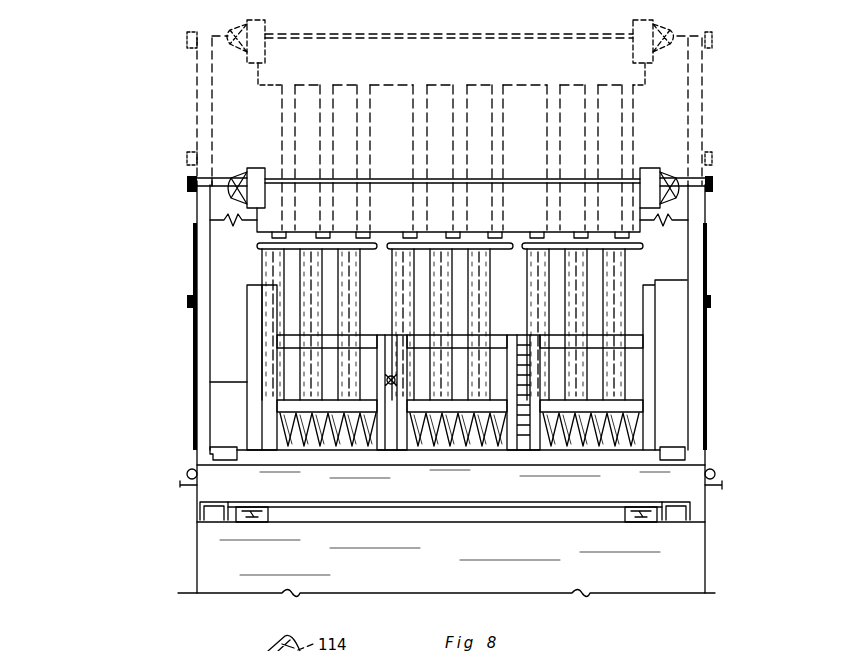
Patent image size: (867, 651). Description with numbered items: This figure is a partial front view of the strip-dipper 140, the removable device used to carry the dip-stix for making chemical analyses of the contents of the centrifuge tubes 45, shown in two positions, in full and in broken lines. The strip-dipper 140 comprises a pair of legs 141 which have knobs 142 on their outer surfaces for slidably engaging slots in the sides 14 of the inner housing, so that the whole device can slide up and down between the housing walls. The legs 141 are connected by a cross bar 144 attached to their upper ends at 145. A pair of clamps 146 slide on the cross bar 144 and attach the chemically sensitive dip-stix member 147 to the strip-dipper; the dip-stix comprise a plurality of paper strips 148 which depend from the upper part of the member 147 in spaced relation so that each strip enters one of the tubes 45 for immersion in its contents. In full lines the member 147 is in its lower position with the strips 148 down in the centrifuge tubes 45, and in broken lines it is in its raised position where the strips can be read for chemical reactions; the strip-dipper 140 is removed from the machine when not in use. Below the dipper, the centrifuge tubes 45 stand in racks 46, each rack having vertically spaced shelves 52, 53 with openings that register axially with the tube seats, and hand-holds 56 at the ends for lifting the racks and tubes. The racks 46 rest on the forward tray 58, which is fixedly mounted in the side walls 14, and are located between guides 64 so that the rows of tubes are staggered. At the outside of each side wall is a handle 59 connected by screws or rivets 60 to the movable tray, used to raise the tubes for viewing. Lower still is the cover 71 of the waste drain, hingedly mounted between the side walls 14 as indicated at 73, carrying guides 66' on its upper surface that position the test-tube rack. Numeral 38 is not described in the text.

The sides 14 is at (194, 373).
The housing 38 is at (226, 257).
The centrifuge tubes 45 is at (432, 242).
The racks 46 is at (238, 384).
The shelf 52 is at (292, 404).
The shelf 53 is at (634, 343).
The hand-holds 56 is at (256, 308).
The forward tray 58 is at (316, 456).
The handle 59 is at (180, 483).
The screws or rivets 60 is at (189, 470).
The guides 64 is at (224, 455).
The guides 66' is at (447, 520).
The cover 71 is at (452, 512).
The hinge mounting 73 is at (270, 517).
The strip-dipper 140 is at (197, 74).
The legs 141 is at (197, 110).
The knobs 142 is at (187, 158).
The cross bar 144 is at (240, 37).
The attachment points 145 is at (187, 42).
The clamps 146 is at (248, 58).
The dip-stix member 147 is at (511, 92).
The paper strips 148 is at (400, 100).